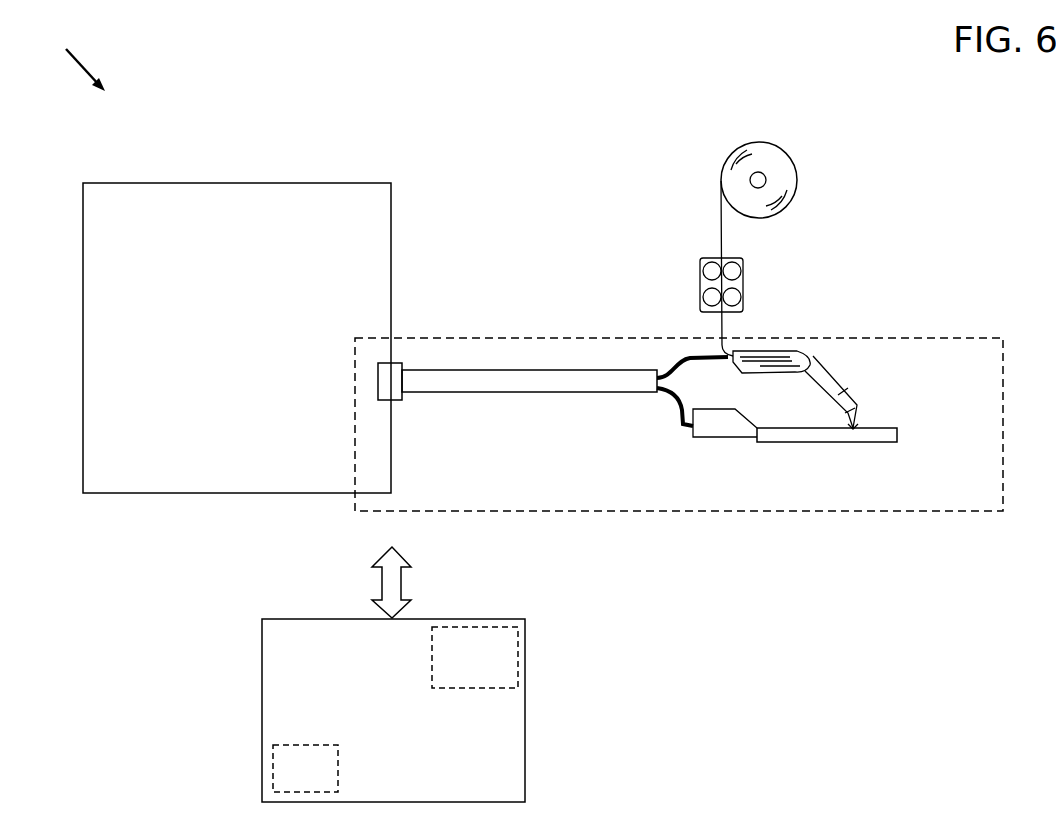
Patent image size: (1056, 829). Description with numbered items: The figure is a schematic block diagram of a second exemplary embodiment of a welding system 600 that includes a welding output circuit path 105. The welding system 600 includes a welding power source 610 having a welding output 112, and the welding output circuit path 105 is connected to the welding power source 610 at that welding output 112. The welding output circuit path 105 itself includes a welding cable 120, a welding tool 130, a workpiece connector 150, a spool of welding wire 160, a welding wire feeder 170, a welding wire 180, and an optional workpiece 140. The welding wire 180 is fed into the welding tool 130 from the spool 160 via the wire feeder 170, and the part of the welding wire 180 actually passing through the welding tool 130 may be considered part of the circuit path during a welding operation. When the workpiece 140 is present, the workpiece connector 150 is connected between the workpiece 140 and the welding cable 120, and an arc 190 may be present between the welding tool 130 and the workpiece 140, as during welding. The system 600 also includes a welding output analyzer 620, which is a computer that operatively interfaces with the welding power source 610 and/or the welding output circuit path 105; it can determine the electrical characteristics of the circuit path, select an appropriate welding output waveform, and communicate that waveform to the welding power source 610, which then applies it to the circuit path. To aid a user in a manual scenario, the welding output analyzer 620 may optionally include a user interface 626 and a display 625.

The welding system 600 is at (68, 62).
The welding power source 610 is at (216, 415).
The welding output circuit path 105 is at (522, 338).
The welding output 112 is at (392, 362).
The welding cable 120 is at (507, 395).
The spool of welding wire 160 is at (796, 178).
The welding wire feeder 170 is at (745, 287).
The welding wire 180 is at (736, 333).
The welding tool 130 is at (812, 357).
The arc 190 is at (852, 424).
The workpiece connector 150 is at (715, 437).
The workpiece 140 is at (818, 443).
The welding output analyzer 620 is at (278, 619).
The display 625 is at (470, 688).
The user interface 626 is at (300, 745).